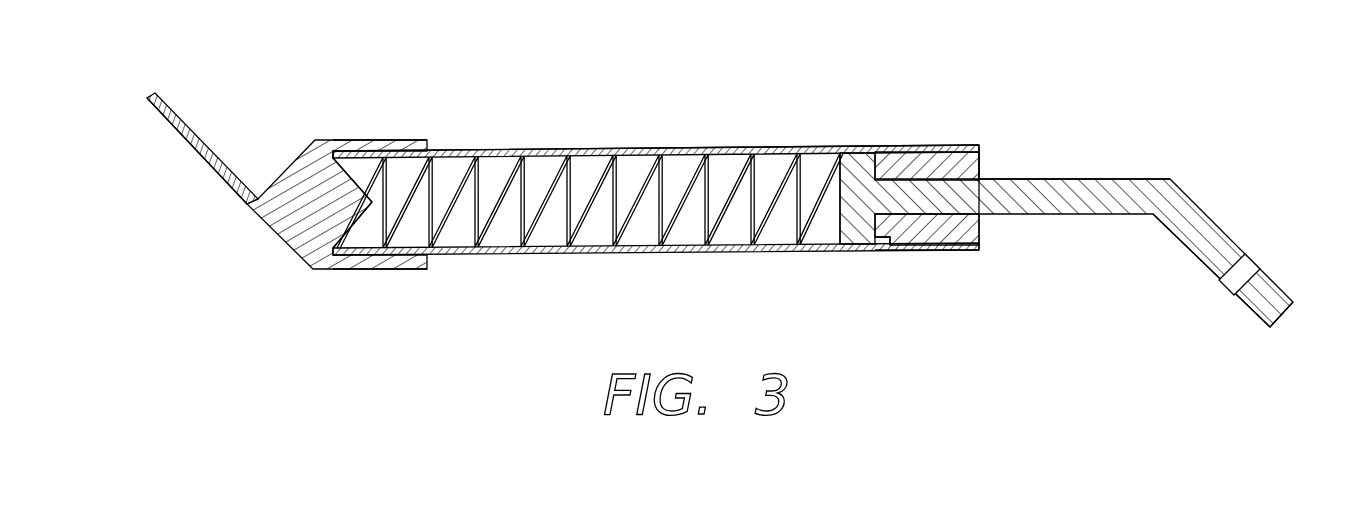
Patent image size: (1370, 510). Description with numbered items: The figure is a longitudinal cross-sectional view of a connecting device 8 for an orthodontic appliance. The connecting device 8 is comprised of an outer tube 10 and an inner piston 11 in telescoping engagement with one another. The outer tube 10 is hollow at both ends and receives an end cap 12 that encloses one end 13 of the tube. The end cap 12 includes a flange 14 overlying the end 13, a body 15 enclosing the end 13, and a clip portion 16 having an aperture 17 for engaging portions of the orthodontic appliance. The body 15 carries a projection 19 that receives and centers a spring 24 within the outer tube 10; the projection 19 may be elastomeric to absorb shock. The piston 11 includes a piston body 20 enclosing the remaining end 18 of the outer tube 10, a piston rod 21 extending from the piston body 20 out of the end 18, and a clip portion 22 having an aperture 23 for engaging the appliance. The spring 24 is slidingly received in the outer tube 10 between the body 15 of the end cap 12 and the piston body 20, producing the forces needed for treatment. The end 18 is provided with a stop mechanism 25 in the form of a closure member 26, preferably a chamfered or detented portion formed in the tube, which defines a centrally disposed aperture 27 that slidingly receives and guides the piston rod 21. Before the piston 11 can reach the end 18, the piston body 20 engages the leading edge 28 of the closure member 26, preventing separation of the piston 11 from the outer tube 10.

The connecting device 8 is at (537, 140).
The outer tube 10 is at (725, 147).
The piston 11 is at (1082, 168).
The end cap 12 is at (307, 133).
The end 13 is at (357, 151).
The flange 14 is at (412, 270).
The body 15 is at (302, 230).
The clip portion 16 is at (213, 165).
The aperture 17 is at (174, 94).
The end 18 is at (922, 136).
The projection 19 is at (366, 211).
The piston body 20 is at (858, 160).
The piston rod 21 is at (1132, 188).
The clip portion 22 is at (1197, 213).
The aperture 23 is at (1269, 255).
The spring 24 is at (768, 235).
The stop mechanism 25 is at (954, 262).
The closure member 26 is at (977, 228).
The aperture 27 is at (987, 166).
The leading edge 28 is at (893, 250).